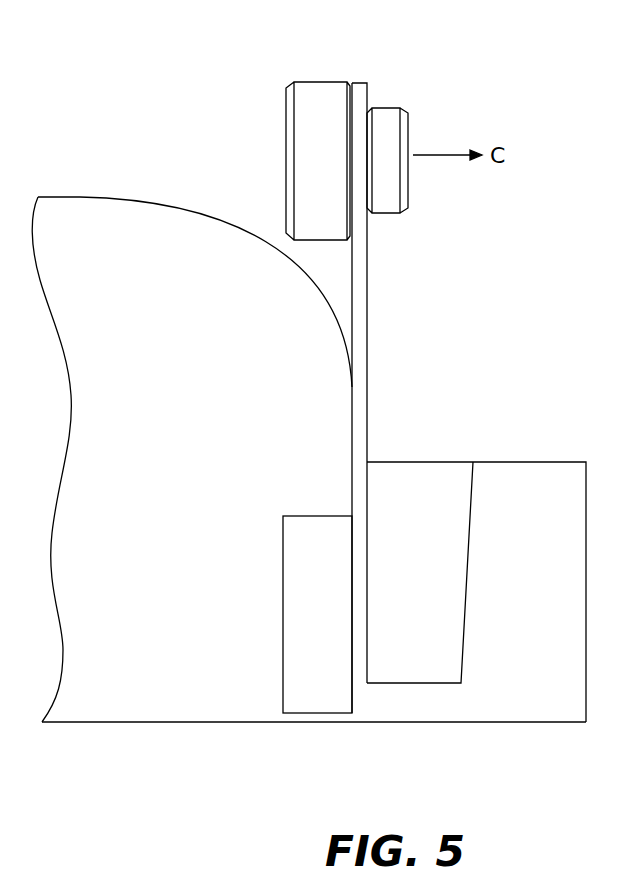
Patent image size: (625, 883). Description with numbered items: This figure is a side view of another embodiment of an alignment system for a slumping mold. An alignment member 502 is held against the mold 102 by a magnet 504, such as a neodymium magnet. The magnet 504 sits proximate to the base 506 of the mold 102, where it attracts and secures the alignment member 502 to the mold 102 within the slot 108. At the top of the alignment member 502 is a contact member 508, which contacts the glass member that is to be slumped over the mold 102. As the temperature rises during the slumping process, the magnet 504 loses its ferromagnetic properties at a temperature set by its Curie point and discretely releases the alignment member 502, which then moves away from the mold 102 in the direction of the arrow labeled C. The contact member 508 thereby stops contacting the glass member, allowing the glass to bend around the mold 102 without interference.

The mold 102 is at (251, 470).
The slot 108 is at (405, 497).
The alignment member 502 is at (368, 242).
The magnet 504 is at (298, 630).
The base 506 is at (195, 722).
The contact member 508 is at (306, 80).